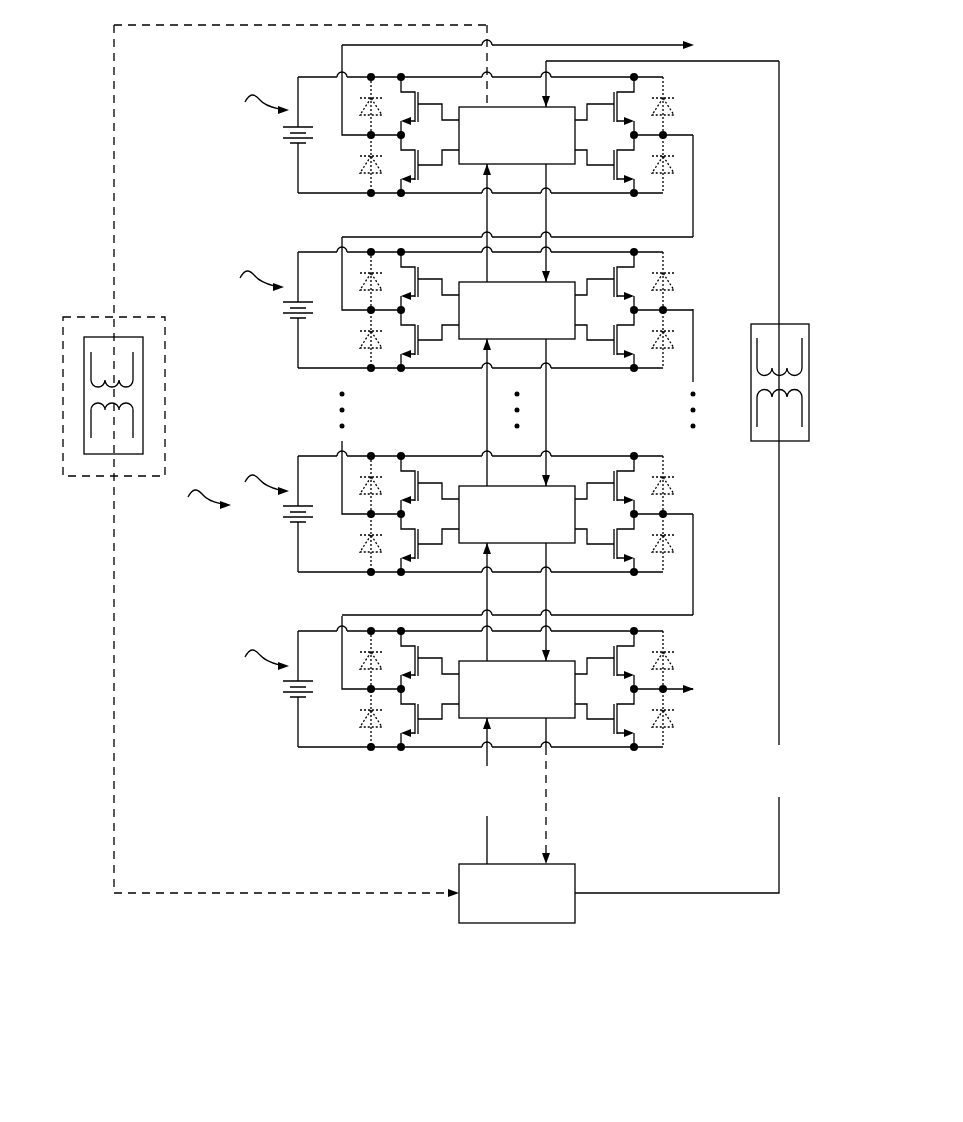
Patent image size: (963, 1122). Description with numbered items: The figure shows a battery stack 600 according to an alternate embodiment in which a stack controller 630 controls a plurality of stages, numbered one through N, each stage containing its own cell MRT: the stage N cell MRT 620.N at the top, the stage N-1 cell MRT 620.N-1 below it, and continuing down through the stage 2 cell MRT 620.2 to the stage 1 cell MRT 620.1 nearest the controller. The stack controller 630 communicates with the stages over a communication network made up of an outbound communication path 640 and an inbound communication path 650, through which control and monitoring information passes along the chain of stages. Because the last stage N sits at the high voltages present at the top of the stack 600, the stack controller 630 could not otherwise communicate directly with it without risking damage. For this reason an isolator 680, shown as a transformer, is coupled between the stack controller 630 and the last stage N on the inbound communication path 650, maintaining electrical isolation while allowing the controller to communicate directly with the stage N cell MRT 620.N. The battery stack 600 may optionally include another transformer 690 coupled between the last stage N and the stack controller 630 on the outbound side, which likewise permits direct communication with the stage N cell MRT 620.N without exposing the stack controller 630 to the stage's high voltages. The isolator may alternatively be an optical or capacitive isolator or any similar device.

The battery stack 600 is at (454, 520).
The stage N cell MRT 620.N is at (497, 153).
The stage N-1 cell MRT 620.N-1 is at (489, 328).
The stage 2 cell MRT 620.2 is at (498, 532).
The stage 1 cell MRT 620.1 is at (498, 707).
The stack controller 630 is at (504, 918).
The outbound communication path 640 is at (496, 815).
The inbound communication path 650 is at (789, 793).
The isolator 680 is at (830, 381).
The transformer 690 is at (76, 383).